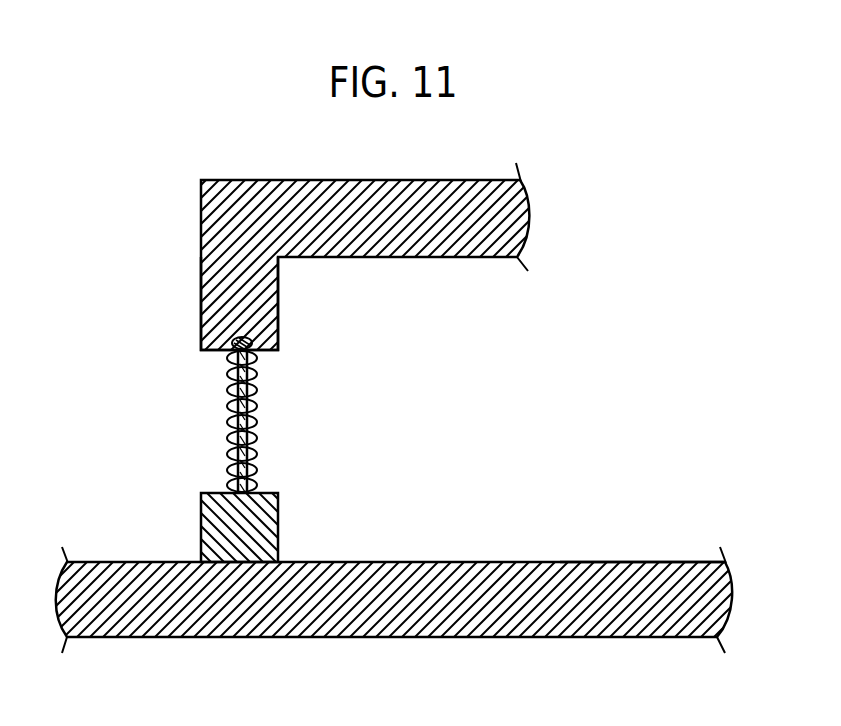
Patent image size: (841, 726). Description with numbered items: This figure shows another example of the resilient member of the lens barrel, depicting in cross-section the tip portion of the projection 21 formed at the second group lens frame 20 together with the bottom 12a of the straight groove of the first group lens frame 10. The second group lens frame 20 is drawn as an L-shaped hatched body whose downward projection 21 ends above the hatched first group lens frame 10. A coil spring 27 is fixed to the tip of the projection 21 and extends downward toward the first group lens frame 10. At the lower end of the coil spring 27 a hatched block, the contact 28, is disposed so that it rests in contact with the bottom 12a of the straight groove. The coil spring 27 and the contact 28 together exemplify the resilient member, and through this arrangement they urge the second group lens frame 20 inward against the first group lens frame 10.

The first group lens frame 10 is at (220, 630).
The bottom of straight groove 12a is at (608, 563).
The second group lens frame 20 is at (408, 183).
The projection 21 is at (212, 290).
The coil spring 27 is at (223, 400).
The contact 28 is at (272, 522).